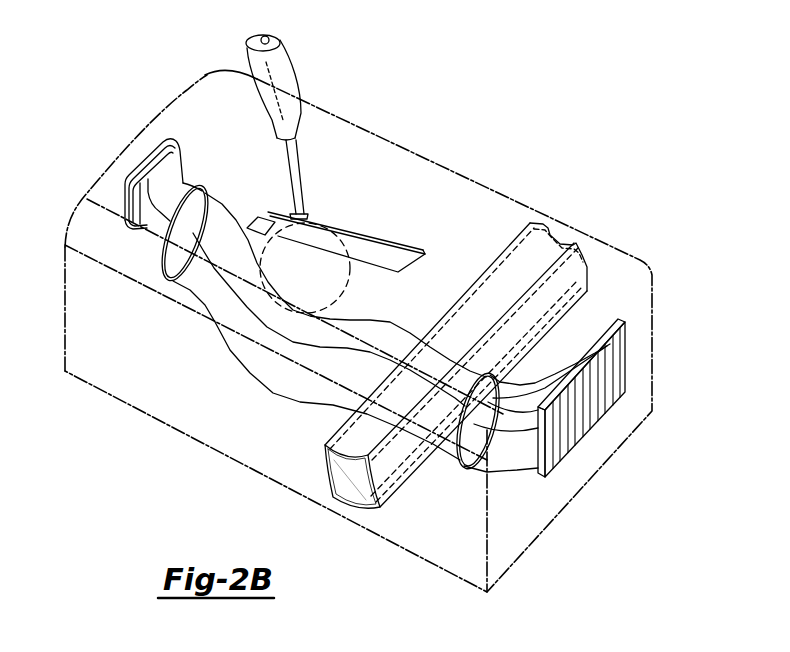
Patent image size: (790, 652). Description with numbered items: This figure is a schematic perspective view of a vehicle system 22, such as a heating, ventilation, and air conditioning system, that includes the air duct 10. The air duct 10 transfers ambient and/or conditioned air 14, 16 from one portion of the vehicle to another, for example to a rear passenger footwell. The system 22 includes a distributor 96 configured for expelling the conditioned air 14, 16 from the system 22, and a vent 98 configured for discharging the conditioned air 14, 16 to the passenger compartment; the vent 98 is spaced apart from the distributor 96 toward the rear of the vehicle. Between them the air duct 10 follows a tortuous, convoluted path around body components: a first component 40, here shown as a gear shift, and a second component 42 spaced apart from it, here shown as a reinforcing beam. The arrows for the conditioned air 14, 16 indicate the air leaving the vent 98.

The air duct 10 is at (390, 320).
The conditioned air 14 is at (563, 413).
The conditioned air 16 is at (603, 380).
The system 22 is at (541, 92).
The first component 40 is at (371, 222).
The second component 42 is at (549, 232).
The distributor 96 is at (183, 173).
The vent 98 is at (513, 468).